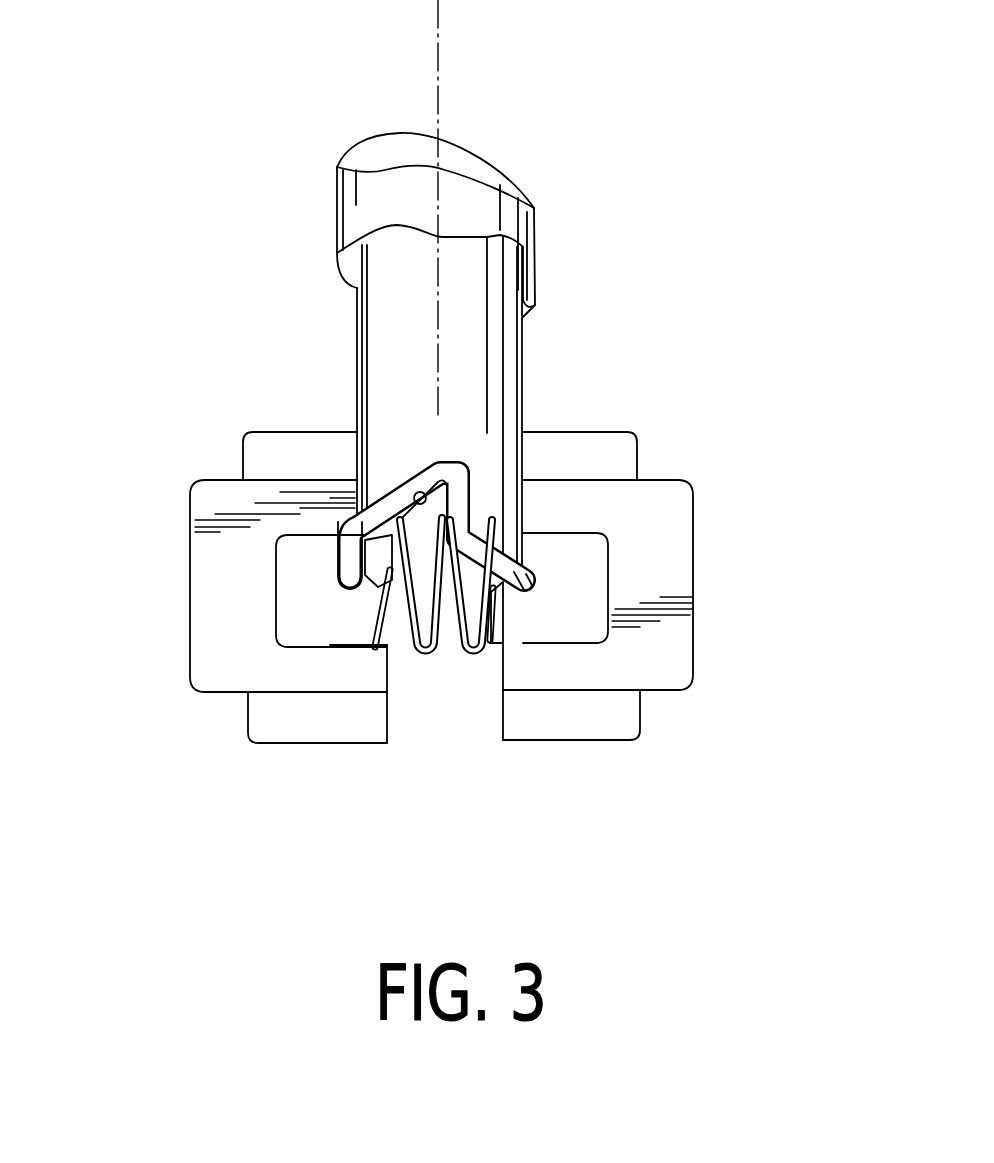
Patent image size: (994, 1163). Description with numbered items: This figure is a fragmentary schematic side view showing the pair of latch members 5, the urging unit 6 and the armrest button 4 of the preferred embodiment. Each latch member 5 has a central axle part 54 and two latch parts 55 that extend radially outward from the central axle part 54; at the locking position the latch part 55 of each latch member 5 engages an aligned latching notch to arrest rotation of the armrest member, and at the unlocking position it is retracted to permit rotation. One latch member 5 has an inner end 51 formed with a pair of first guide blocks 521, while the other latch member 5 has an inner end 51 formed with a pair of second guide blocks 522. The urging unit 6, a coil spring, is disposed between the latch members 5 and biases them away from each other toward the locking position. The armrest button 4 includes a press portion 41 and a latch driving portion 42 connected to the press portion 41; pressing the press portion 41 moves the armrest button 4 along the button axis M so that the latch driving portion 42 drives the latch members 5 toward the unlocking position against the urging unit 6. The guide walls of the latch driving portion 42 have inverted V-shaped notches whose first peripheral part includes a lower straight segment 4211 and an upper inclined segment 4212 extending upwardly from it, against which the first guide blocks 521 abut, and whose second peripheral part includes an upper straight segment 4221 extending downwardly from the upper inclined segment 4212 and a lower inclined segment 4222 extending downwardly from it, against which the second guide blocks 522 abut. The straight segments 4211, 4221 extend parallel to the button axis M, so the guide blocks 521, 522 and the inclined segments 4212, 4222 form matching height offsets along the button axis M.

The button axis M is at (437, 45).
The armrest button 4 is at (578, 230).
The press portion 41 is at (350, 215).
The latch driving portion 42 is at (410, 347).
The lower straight segment 4211 is at (363, 588).
The upper inclined segment 4212 is at (443, 486).
The upper straight segment 4221 is at (413, 497).
The lower inclined segment 4222 is at (497, 560).
The latch member 5 is at (150, 468).
The inner end 51 is at (342, 670).
The first guide block 521 is at (385, 575).
The second guide block 522 is at (505, 625).
The central axle part 54 is at (207, 575).
The latch part 55 is at (277, 460).
The urging unit 6 is at (480, 655).